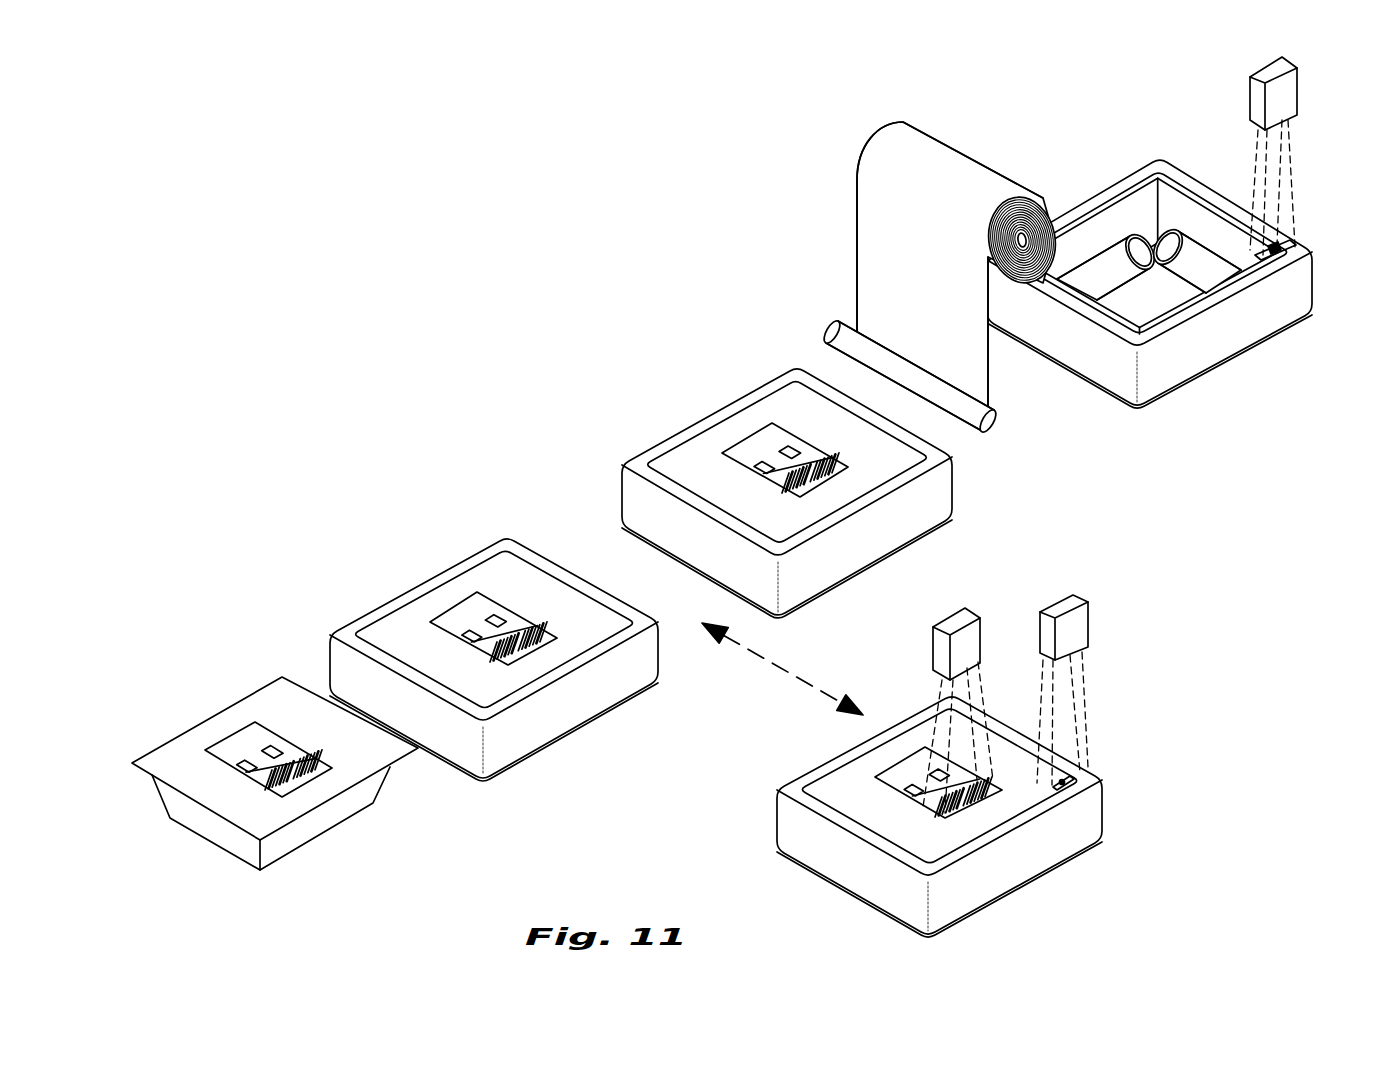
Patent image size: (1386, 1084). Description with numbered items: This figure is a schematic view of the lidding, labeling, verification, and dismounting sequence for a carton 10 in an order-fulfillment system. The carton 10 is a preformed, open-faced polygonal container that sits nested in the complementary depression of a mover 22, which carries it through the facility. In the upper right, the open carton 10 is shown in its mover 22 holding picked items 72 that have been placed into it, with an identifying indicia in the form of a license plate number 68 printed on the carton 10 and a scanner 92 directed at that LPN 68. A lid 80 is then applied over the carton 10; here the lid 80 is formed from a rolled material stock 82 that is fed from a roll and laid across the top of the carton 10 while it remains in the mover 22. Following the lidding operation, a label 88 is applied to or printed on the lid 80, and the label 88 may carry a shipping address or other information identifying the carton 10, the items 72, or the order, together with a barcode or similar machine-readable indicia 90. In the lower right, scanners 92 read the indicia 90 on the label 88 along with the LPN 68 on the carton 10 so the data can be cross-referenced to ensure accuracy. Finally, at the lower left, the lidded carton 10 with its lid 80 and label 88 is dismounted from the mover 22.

The carton 10 is at (753, 547).
The mover 22 is at (527, 752).
The license plate number (LPN) 68 is at (1267, 253).
The items 72 is at (1153, 237).
The lid 80 is at (187, 730).
The rolled material stock 82 is at (863, 167).
The label 88 is at (487, 600).
The machine-readable indicia 90 is at (535, 630).
The scanners 92 is at (1295, 97).